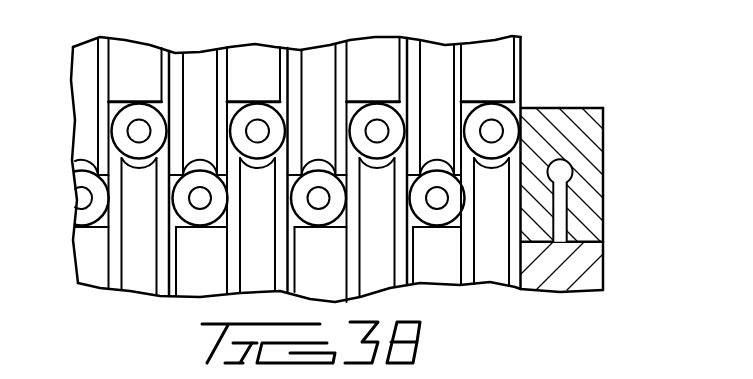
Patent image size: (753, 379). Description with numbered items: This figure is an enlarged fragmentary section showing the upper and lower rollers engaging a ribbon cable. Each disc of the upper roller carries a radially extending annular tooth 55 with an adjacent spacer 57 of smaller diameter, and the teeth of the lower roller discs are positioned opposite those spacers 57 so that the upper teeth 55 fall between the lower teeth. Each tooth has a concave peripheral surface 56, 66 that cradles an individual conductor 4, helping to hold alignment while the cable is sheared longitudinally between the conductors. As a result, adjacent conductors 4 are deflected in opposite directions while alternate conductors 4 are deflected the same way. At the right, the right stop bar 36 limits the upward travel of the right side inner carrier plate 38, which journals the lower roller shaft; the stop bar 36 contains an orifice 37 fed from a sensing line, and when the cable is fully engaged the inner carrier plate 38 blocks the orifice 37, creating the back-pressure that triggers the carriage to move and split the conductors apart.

The conductor 4 is at (438, 190).
The right stop bar 36 is at (594, 192).
The orifice 37 is at (560, 212).
The right side inner carrier plate 38 is at (583, 255).
The annular tooth 55 is at (324, 60).
The concave peripheral surface 56 is at (317, 190).
The spacer 57 is at (266, 62).
The concave peripheral surface 66 is at (270, 162).